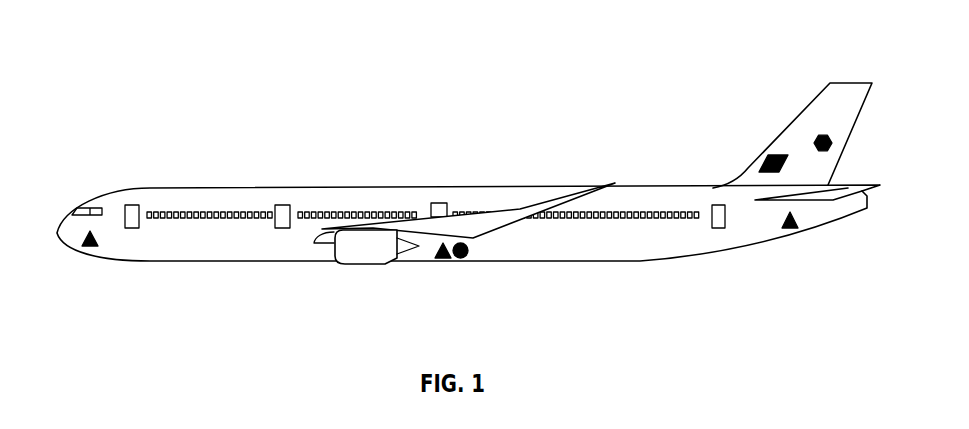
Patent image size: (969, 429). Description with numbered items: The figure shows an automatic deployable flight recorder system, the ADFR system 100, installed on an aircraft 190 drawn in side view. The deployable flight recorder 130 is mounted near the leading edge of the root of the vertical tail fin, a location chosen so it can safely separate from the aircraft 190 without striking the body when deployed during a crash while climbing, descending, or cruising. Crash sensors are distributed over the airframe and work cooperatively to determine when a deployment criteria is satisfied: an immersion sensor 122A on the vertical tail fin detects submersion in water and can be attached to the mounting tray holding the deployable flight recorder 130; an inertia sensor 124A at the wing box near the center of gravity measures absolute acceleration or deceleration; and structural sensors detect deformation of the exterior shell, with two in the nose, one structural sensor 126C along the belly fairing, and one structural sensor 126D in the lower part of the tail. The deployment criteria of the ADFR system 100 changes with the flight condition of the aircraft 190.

The ADFR system 100 is at (110, 133).
The aircraft 190 is at (622, 252).
The structural sensor 126C is at (441, 264).
The inertia sensor 124A is at (464, 264).
The structural sensor 126D is at (793, 234).
The deployable flight recorder 130 is at (762, 158).
The immersion sensor 122A is at (842, 152).